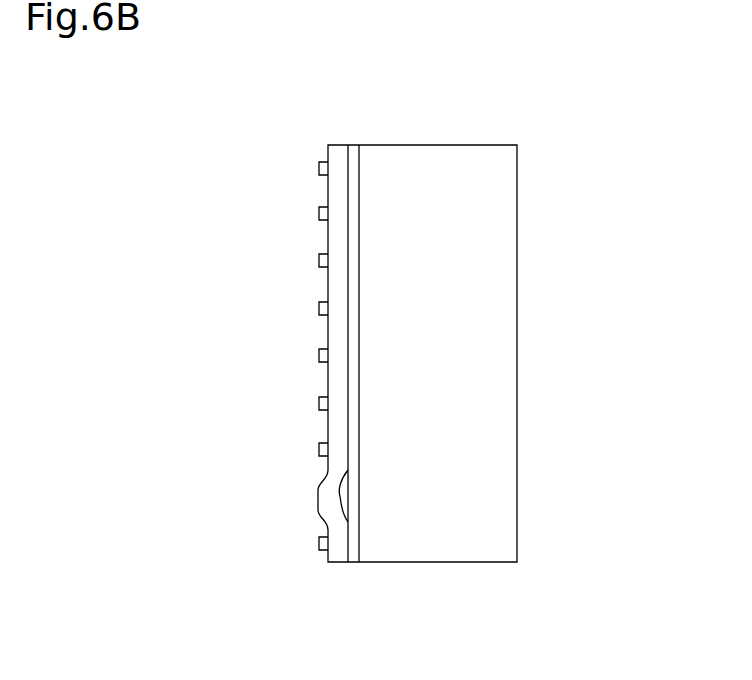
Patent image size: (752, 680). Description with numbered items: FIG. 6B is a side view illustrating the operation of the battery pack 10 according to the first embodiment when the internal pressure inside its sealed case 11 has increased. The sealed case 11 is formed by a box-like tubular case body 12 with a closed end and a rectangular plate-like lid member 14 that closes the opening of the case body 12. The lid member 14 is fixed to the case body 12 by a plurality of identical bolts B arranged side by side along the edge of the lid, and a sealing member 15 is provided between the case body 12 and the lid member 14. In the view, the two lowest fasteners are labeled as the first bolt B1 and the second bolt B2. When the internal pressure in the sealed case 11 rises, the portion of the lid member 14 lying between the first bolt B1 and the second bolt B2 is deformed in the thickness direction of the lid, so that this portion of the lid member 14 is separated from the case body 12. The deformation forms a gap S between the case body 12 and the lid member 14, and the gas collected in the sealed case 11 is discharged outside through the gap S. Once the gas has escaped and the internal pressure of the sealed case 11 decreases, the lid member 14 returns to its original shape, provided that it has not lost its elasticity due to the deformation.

The battery pack 10 is at (641, 115).
The sealed case 11 is at (423, 621).
The case body 12 is at (400, 565).
The lid member 14 is at (336, 565).
The sealing member 15 is at (352, 150).
The gap S is at (344, 491).
The bolts B is at (319, 212).
The first bolt B1 is at (319, 543).
The second bolt B2 is at (319, 450).